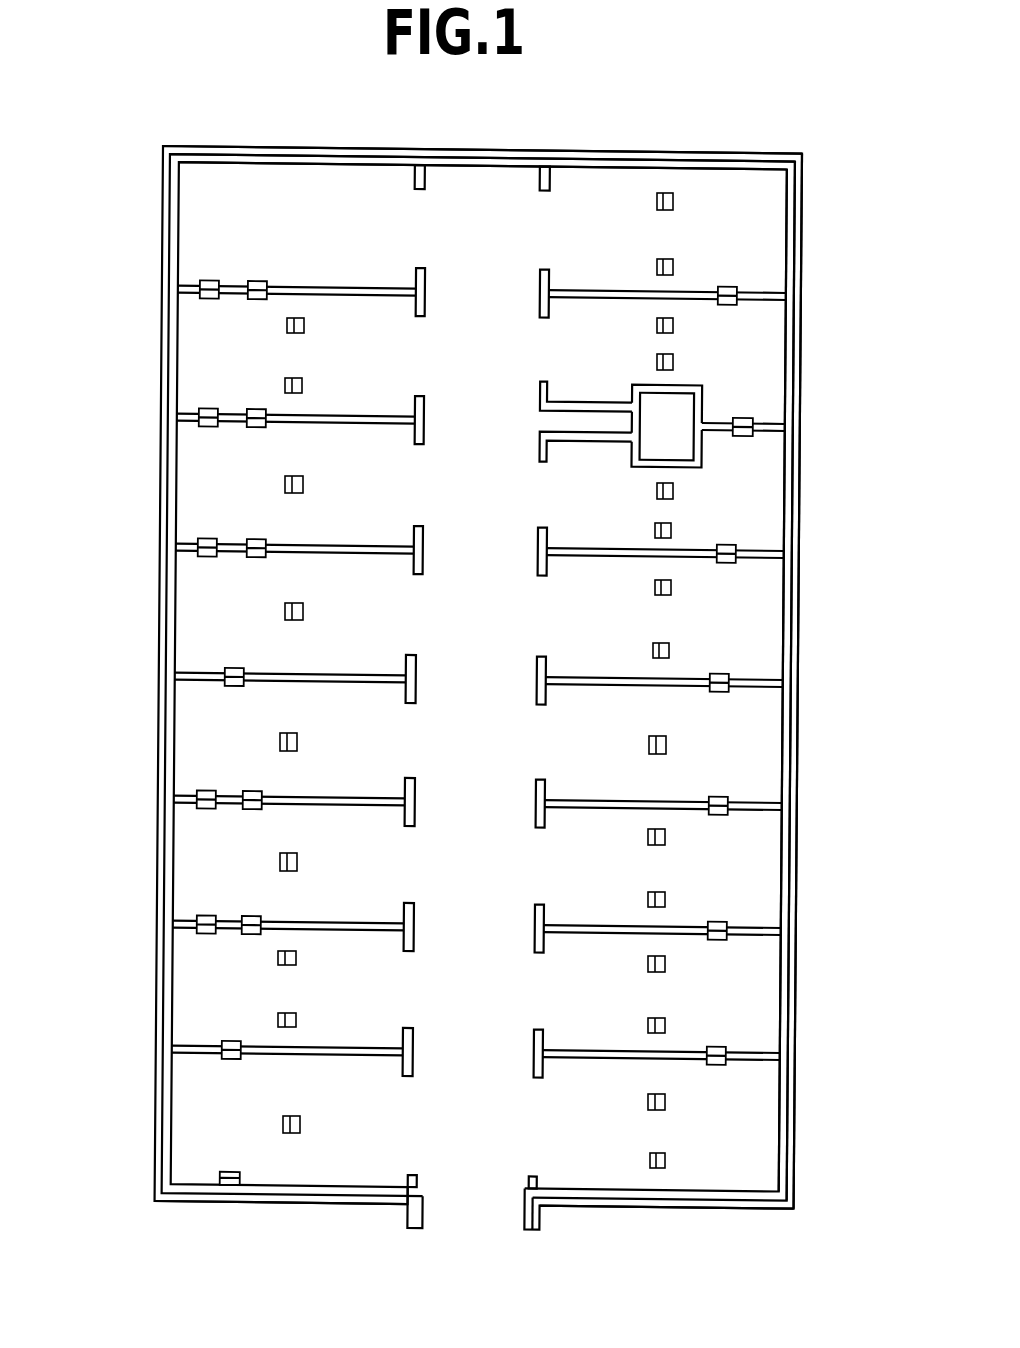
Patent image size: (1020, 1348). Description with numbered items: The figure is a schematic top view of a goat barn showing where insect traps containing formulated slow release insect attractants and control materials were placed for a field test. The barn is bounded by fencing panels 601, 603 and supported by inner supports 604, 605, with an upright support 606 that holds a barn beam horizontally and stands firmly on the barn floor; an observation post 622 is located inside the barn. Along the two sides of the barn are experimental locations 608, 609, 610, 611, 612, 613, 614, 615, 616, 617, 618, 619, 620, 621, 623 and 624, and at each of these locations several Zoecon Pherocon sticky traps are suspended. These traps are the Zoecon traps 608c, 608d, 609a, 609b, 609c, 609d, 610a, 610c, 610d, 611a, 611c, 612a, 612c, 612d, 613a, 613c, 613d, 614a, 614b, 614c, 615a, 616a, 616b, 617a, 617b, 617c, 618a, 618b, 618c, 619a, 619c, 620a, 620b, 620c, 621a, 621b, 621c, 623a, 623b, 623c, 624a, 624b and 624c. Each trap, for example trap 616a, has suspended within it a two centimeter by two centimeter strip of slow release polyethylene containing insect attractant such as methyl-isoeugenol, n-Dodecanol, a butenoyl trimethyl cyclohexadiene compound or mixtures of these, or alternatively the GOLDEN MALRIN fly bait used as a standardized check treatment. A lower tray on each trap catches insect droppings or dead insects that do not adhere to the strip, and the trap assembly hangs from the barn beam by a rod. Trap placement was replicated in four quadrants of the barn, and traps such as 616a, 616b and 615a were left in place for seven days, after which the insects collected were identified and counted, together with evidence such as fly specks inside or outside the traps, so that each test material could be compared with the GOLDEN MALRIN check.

The fencing panel 601 is at (629, 1206).
The fencing panel 603 is at (248, 150).
The inner support 604 is at (415, 172).
The inner support 605 is at (540, 172).
The upright support 606 is at (790, 1199).
The experimental location 608 is at (200, 186).
The Zoecon Pherocon 1C trap 608c is at (212, 278).
The Zoecon Pherocon 1C trap 608d is at (268, 278).
The experimental location 609 is at (200, 326).
The Zoecon Pherocon 1C trap 609a is at (307, 327).
The Zoecon Pherocon 1C trap 609b is at (305, 384).
The Zoecon Pherocon 1C trap 609c is at (211, 408).
The Zoecon Pherocon 1C trap 609d is at (270, 408).
The experimental location 610 is at (200, 455).
The Zoecon Pherocon 1C trap 610a is at (306, 483).
The Zoecon Pherocon 1C trap 610c is at (211, 538).
The Zoecon Pherocon 1C trap 610d is at (270, 538).
The experimental location 611 is at (200, 588).
The Zoecon Pherocon 1C trap 611a is at (306, 610).
The Zoecon Pherocon 1C trap 611c is at (236, 668).
The experimental location 612 is at (205, 713).
The Zoecon Pherocon 1C trap 612a is at (300, 736).
The Zoecon Pherocon 1C trap 612c is at (208, 792).
The Zoecon Pherocon 1C trap 612d is at (264, 790).
The experimental location 613 is at (205, 856).
The Zoecon Pherocon 1C trap 613a is at (300, 866).
The Zoecon Pherocon 1C trap 613c is at (213, 909).
The Zoecon Pherocon 1C trap 613d is at (262, 916).
The experimental location 614 is at (198, 985).
The Zoecon Pherocon 1C trap 614a is at (299, 964).
The Zoecon Pherocon 1C trap 614b is at (298, 1021).
The Zoecon Pherocon 1C trap 614c is at (232, 1042).
The experimental location 615 is at (190, 1098).
The Zoecon Pherocon 1C trap 615a is at (302, 1124).
The experimental location 616 is at (750, 1093).
The Zoecon Pherocon 1C trap 616a is at (647, 1102).
The Zoecon Pherocon 1C trap 616b is at (649, 1161).
The experimental location 617 is at (755, 974).
The Zoecon Pherocon 1C trap 617a is at (647, 966).
The Zoecon Pherocon 1C trap 617b is at (647, 1026).
The Zoecon Pherocon 1C trap 617c is at (718, 1048).
The experimental location 618 is at (755, 850).
The Zoecon Pherocon 1C trap 618a is at (647, 838).
The Zoecon Pherocon 1C trap 618b is at (647, 900).
The Zoecon Pherocon 1C trap 618c is at (730, 910).
The experimental location 619 is at (755, 722).
The Zoecon Pherocon 1C trap 619a is at (647, 745).
The Zoecon Pherocon 1C trap 619c is at (720, 797).
The experimental location 620 is at (760, 595).
The Zoecon Pherocon 1C trap 620a is at (653, 588).
The Zoecon Pherocon 1C trap 620b is at (651, 651).
The Zoecon Pherocon 1C trap 620c is at (722, 673).
The experimental location 621 is at (758, 468).
The Zoecon Pherocon 1C trap 621a is at (655, 490).
The Zoecon Pherocon 1C trap 621b is at (653, 531).
The Zoecon Pherocon 1C trap 621c is at (727, 546).
The observation post 622 is at (652, 405).
The experimental location 623 is at (765, 357).
The Zoecon Pherocon 1C trap 623a is at (655, 326).
The Zoecon Pherocon 1C trap 623b is at (675, 360).
The Zoecon Pherocon 1C trap 623c is at (745, 415).
The experimental location 624 is at (770, 205).
The Zoecon Pherocon 1C trap 624a is at (658, 188).
The Zoecon Pherocon 1C trap 624b is at (655, 267).
The Zoecon Pherocon 1C trap 624c is at (727, 283).